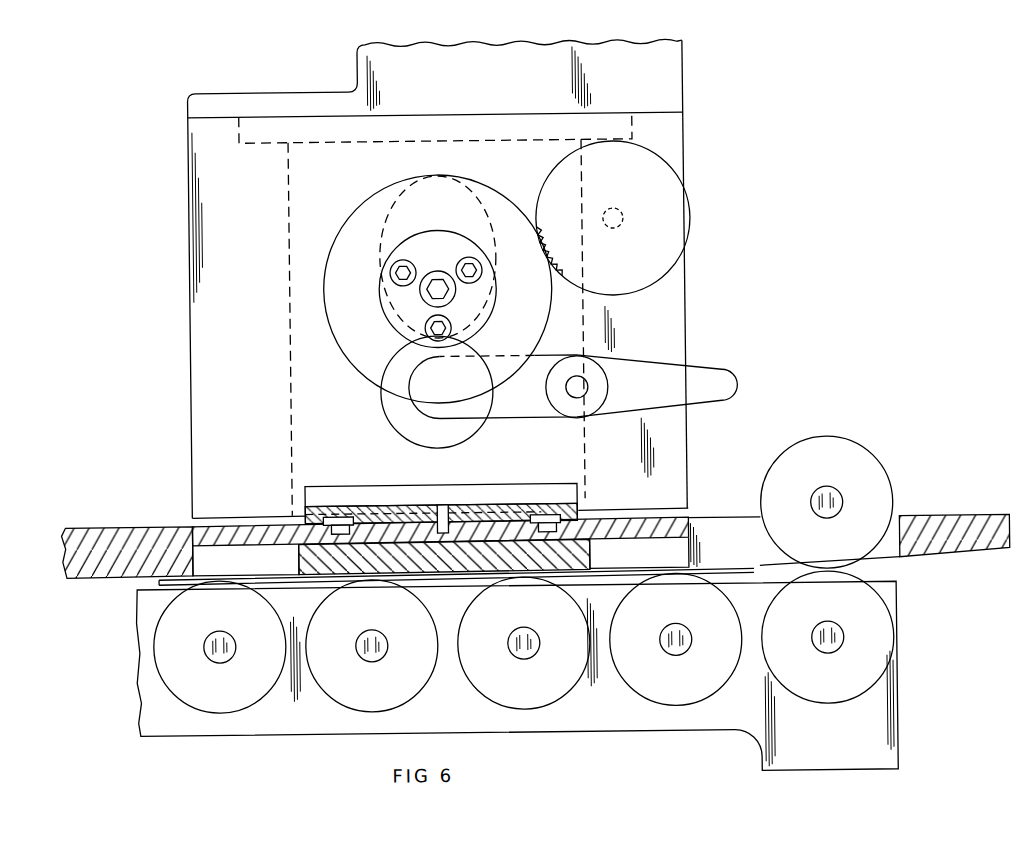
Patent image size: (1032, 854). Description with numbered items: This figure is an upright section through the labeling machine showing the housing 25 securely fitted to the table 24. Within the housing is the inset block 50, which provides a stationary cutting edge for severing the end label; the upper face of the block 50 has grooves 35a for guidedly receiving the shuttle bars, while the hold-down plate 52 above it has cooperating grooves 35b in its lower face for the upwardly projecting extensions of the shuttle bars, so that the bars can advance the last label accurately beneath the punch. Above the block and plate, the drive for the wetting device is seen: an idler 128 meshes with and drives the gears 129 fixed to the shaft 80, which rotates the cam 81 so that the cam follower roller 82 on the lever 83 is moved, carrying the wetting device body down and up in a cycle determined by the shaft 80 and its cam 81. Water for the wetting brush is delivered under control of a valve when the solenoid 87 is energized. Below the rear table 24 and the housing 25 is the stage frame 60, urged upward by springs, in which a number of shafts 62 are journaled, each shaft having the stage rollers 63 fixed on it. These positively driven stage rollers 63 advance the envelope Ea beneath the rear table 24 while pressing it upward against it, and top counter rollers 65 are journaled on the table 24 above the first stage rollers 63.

The housing 25 is at (193, 141).
The solenoid 87 is at (686, 66).
The gears 129 is at (342, 236).
The cam 81 is at (421, 186).
The shaft 80 is at (424, 300).
The cam follower roller 82 is at (380, 399).
The idler 128 is at (671, 183).
The lever 83 is at (649, 362).
The inset block 50 is at (578, 487).
The hold-down plate 52 is at (460, 505).
The grooves 35b is at (336, 516).
The grooves 35a is at (296, 555).
The table 24 is at (121, 524).
The envelope Ea is at (711, 572).
The top counter rollers 65 is at (826, 444).
The stage frame 60 is at (895, 720).
The stage rollers 63 is at (345, 686).
The shafts 62 is at (215, 650).